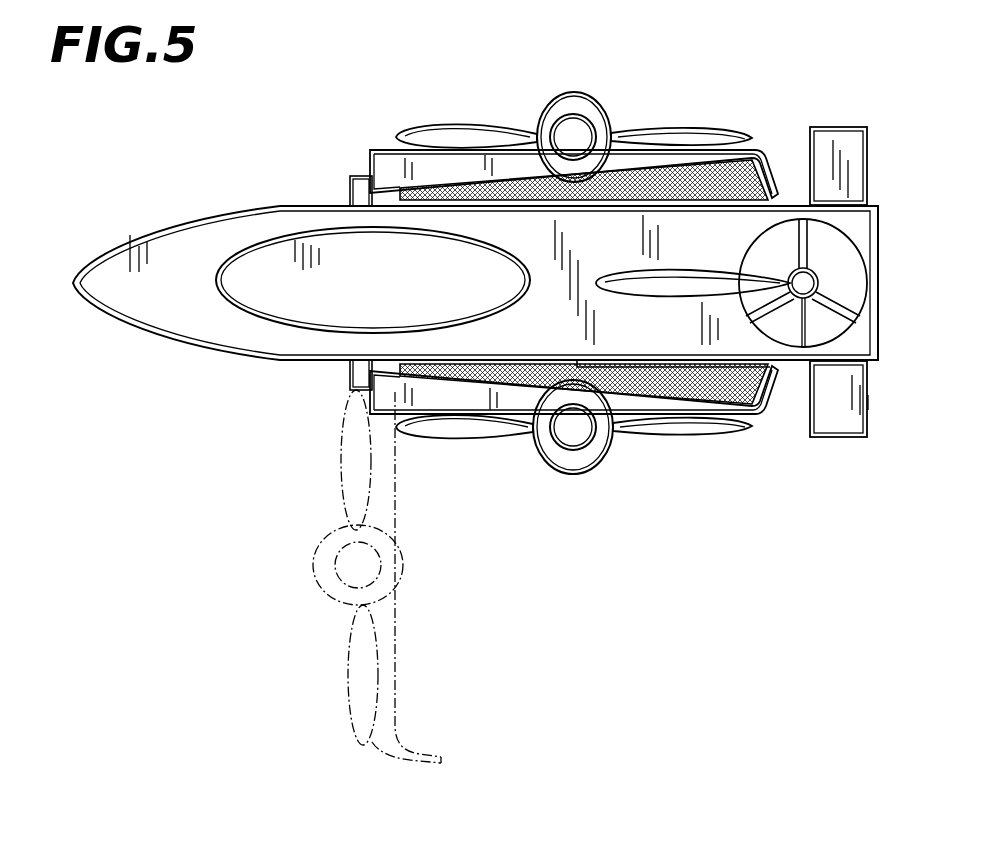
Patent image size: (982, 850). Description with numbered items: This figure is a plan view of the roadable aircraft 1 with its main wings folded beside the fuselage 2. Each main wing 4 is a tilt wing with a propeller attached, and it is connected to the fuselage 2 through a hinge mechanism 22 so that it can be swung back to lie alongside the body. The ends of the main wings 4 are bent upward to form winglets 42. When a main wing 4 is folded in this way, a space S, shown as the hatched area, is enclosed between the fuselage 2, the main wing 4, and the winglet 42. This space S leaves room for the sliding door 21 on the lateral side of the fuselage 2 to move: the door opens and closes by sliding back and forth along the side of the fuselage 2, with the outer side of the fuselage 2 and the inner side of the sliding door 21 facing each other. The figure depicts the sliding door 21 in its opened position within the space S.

The roadable aircraft 1 is at (182, 206).
The fuselage 2 is at (303, 207).
The hinge mechanisms 22 is at (360, 186).
The main wing 4 is at (515, 160).
The space S is at (677, 180).
The sliding door 21 is at (689, 366).
The winglet 42 is at (770, 160).